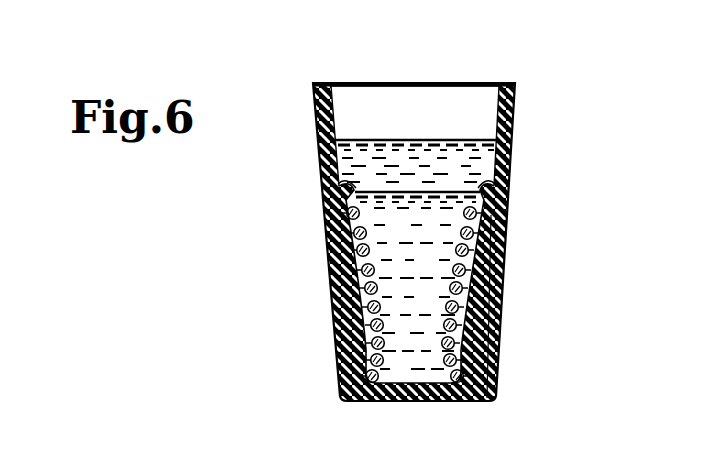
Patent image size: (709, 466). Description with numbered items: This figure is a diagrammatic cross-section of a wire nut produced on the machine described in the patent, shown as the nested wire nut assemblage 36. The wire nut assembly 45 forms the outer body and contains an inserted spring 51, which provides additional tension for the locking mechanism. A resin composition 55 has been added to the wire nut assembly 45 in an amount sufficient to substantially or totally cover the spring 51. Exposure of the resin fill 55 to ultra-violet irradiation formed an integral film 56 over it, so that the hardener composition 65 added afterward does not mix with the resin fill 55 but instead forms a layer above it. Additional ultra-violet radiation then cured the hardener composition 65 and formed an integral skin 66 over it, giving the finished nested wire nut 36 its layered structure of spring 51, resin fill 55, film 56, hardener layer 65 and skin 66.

The nested wire nut assemblage 36 is at (540, 71).
The wire nut assembly 45 is at (314, 101).
The integral film 56 is at (330, 181).
The integral skin 66 is at (442, 139).
The hardener composition 65 is at (500, 168).
The resin composition 55 is at (440, 238).
The spring 51 is at (452, 290).